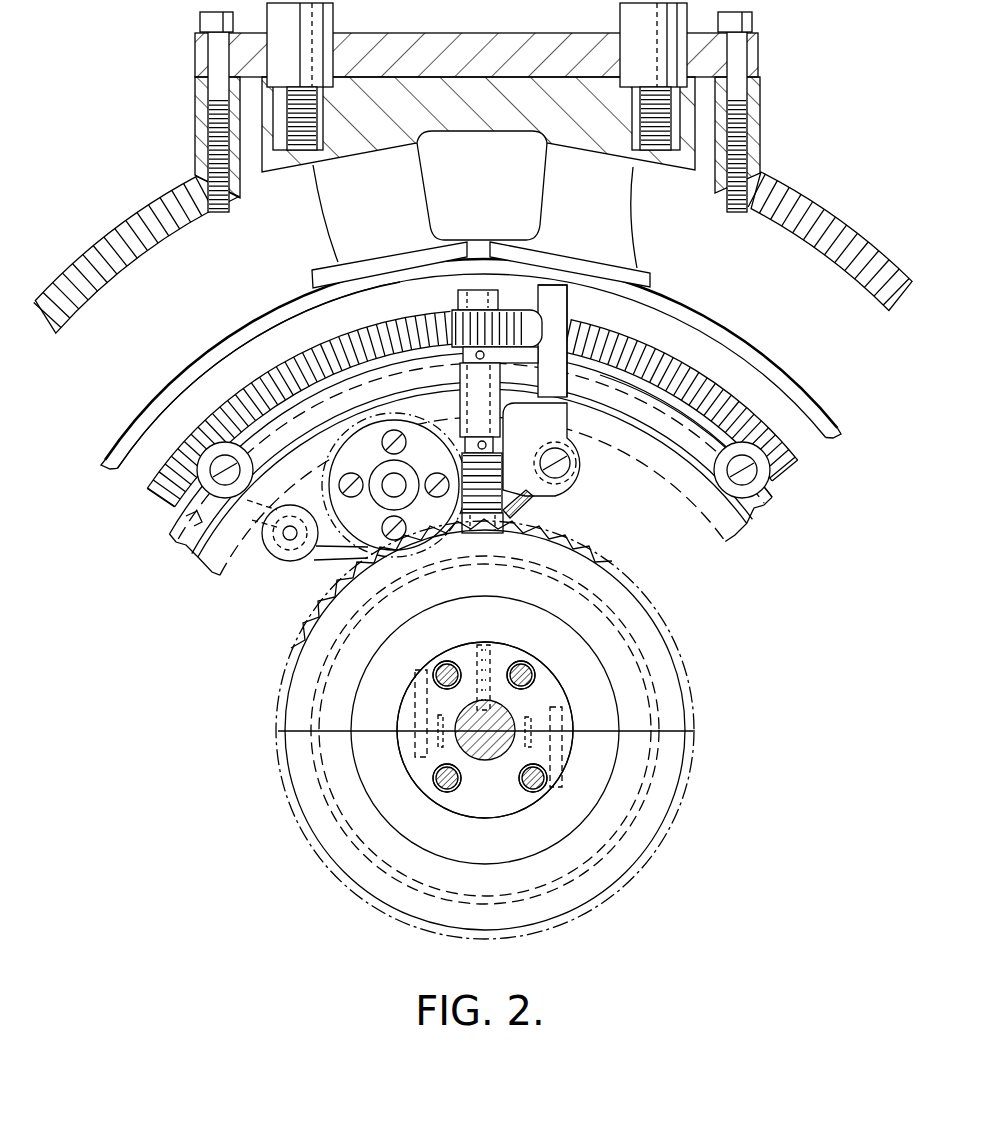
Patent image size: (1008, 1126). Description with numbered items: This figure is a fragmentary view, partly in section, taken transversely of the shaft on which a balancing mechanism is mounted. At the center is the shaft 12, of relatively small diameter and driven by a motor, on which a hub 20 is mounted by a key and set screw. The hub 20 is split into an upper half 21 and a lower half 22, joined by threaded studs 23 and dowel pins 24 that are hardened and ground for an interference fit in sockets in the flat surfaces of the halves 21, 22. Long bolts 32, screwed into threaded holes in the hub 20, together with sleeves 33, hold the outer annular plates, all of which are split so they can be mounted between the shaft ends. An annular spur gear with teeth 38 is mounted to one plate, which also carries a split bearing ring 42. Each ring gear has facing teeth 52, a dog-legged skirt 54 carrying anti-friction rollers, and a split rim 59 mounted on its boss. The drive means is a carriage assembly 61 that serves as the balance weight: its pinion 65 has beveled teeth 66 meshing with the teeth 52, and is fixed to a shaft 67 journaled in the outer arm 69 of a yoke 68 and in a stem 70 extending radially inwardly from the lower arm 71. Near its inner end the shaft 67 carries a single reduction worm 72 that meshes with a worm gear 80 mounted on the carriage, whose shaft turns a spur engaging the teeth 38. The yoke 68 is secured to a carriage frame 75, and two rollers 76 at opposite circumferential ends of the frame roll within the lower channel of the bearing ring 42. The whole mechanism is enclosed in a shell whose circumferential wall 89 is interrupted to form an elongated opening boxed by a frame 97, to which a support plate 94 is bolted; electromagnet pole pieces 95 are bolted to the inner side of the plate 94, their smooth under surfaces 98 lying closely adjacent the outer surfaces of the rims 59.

The support plate 94 is at (502, 52).
The frame 97 is at (762, 100).
The circumferential wall 89 is at (830, 212).
The pole piece 95 is at (395, 197).
The outer arm 69 is at (535, 295).
The under surface 98 is at (312, 292).
The teeth 66 is at (458, 325).
The yoke 68 is at (548, 335).
The teeth 52 is at (670, 360).
The rim 59 is at (218, 350).
The pinion 65 is at (455, 338).
The shaft 67 is at (463, 355).
The stem 70 is at (500, 423).
The lower arm 71 is at (537, 398).
The rollers 76 is at (586, 468).
The carriage frame 75 is at (533, 497).
The teeth 38 is at (576, 556).
The skirt 54 is at (186, 516).
The bearing ring 42 is at (738, 526).
The worm gear 80 is at (368, 523).
The worm 72 is at (458, 540).
The carriage assembly 61 is at (290, 568).
The bolts 32 is at (457, 668).
The upper half 21 is at (500, 655).
The sleeves 33 is at (439, 682).
The dowel pins 24 is at (442, 732).
The threaded studs 23 is at (419, 708).
The shaft 12 is at (490, 760).
The lower half 22 is at (475, 815).
The hub 20 is at (507, 807).